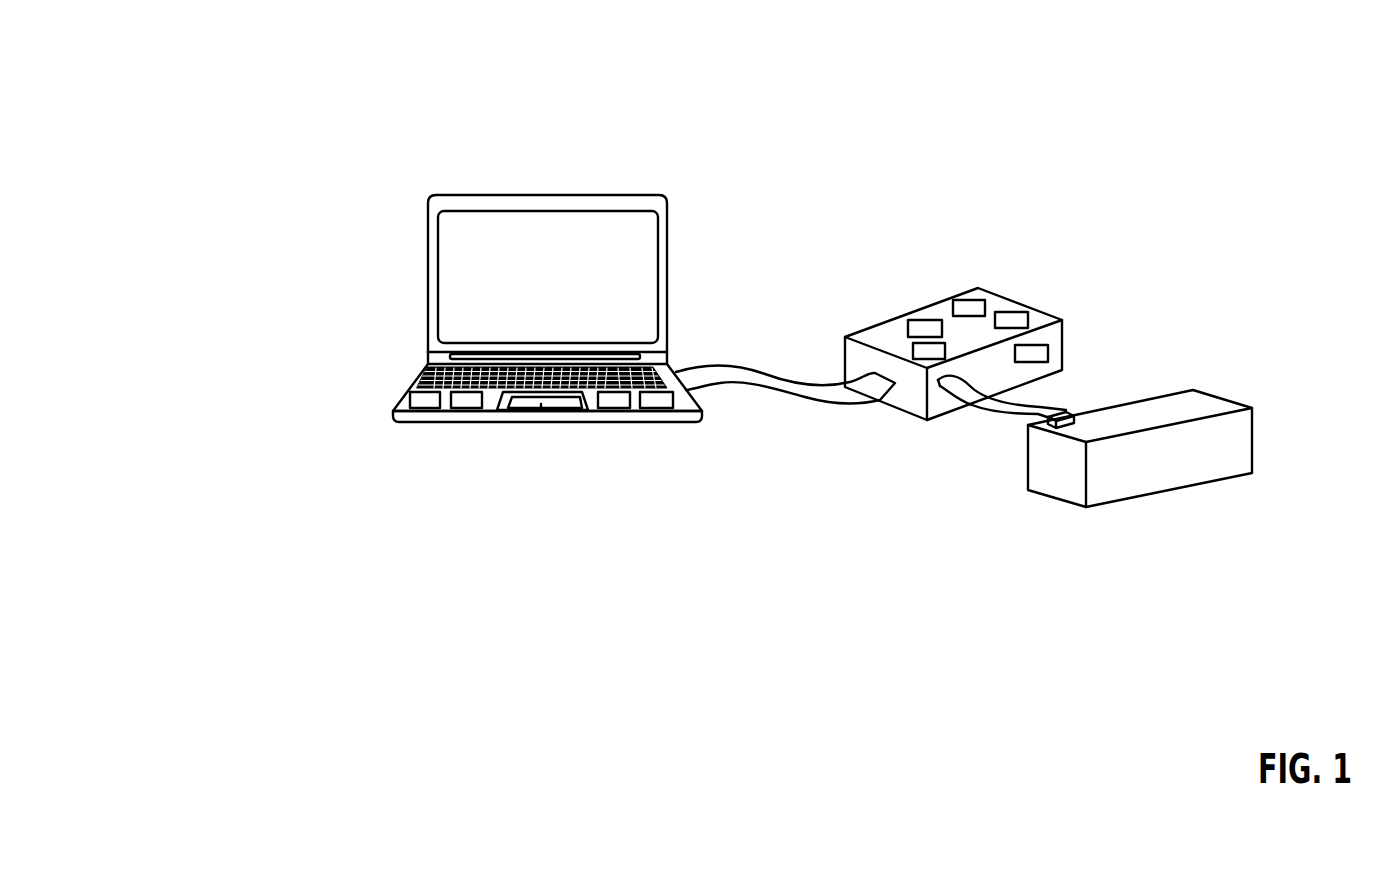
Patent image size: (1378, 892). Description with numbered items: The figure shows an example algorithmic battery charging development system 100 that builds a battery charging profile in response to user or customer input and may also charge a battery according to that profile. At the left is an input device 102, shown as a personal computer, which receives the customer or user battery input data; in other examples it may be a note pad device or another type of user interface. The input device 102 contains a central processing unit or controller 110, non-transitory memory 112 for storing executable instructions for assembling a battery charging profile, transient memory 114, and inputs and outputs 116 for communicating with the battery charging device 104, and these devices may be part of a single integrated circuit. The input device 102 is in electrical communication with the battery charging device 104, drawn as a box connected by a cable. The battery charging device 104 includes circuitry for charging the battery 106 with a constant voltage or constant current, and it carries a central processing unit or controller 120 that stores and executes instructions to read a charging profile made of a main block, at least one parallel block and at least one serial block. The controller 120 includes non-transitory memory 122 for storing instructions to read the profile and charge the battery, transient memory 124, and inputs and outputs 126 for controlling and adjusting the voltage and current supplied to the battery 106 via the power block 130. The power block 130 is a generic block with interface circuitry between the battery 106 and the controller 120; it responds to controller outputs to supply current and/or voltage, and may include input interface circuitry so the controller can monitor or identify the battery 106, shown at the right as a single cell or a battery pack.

The battery development system 100 is at (143, 48).
The input device 102 is at (455, 195).
The battery charging device 104 is at (862, 328).
The battery 106 is at (1115, 503).
The central processing unit or controller 110 is at (427, 401).
The non-transitory memory 112 is at (467, 401).
The transient memory 114 is at (615, 401).
The inputs and outputs 116 is at (657, 401).
The central processing unit or controller 120 is at (927, 327).
The non-transitory memory 122 is at (970, 307).
The transient memory 124 is at (1012, 320).
The inputs and outputs 126 is at (1031, 354).
The power block 130 is at (925, 353).